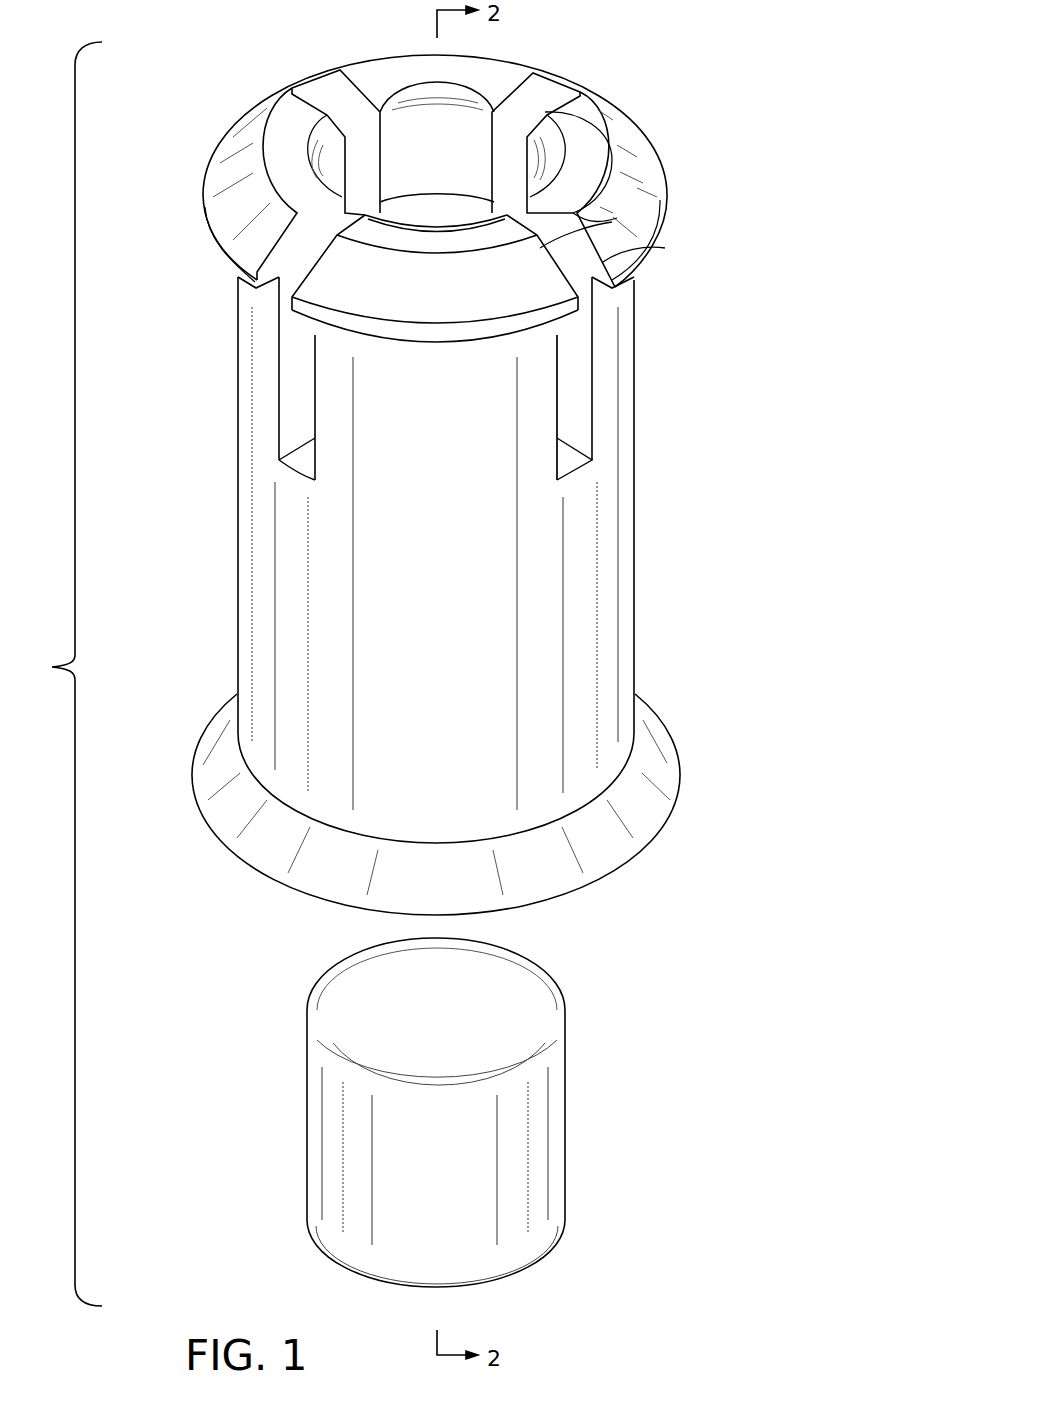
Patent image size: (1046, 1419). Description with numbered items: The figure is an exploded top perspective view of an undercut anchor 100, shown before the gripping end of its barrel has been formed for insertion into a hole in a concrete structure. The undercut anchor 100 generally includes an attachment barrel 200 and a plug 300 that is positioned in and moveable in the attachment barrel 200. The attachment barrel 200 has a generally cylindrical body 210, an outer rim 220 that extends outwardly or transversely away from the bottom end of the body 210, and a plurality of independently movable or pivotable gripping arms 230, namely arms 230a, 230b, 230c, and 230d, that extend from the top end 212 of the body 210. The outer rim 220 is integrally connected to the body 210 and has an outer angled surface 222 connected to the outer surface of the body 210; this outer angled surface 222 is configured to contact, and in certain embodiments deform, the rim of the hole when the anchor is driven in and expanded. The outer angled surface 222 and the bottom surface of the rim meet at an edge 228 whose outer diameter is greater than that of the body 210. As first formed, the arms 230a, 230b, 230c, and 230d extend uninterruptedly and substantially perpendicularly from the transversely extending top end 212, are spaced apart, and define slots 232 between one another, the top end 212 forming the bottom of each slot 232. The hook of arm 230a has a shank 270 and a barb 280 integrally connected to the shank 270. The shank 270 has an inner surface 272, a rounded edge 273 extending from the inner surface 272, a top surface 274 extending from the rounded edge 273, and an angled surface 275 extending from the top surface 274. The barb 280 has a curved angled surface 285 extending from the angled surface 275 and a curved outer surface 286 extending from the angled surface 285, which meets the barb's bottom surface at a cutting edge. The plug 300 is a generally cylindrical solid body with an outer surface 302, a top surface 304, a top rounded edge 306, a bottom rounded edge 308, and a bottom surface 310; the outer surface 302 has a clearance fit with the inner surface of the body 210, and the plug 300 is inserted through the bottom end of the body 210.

The undercut anchor 100 is at (401, 669).
The attachment barrel 200 is at (191, 135).
The generally cylindrical body 210 is at (634, 624).
The top end 212 is at (568, 462).
The outer rim 220 is at (446, 788).
The outer angled surface 222 is at (215, 742).
The edge 228 is at (218, 838).
The gripping arms 230 is at (692, 368).
The gripping arm 230a is at (622, 370).
The gripping arm 230b is at (428, 402).
The gripping arm 230c is at (233, 345).
The gripping arm 230d is at (341, 60).
The slots 232 is at (575, 348).
The shank 270 is at (582, 220).
The inner surface 272 is at (532, 170).
The rounded edge 273 is at (587, 157).
The top surface 274 is at (632, 128).
The angled surface 275 is at (637, 155).
The barb 280 is at (603, 272).
The angled surface 285 is at (630, 203).
The outer surface 286 is at (643, 255).
The plug 300 is at (577, 939).
The outer surface 302 is at (565, 1128).
The top surface 304 is at (405, 997).
The top rounded edge 306 is at (307, 1002).
The bottom rounded edge 308 is at (533, 1258).
The bottom surface 310 is at (461, 1294).